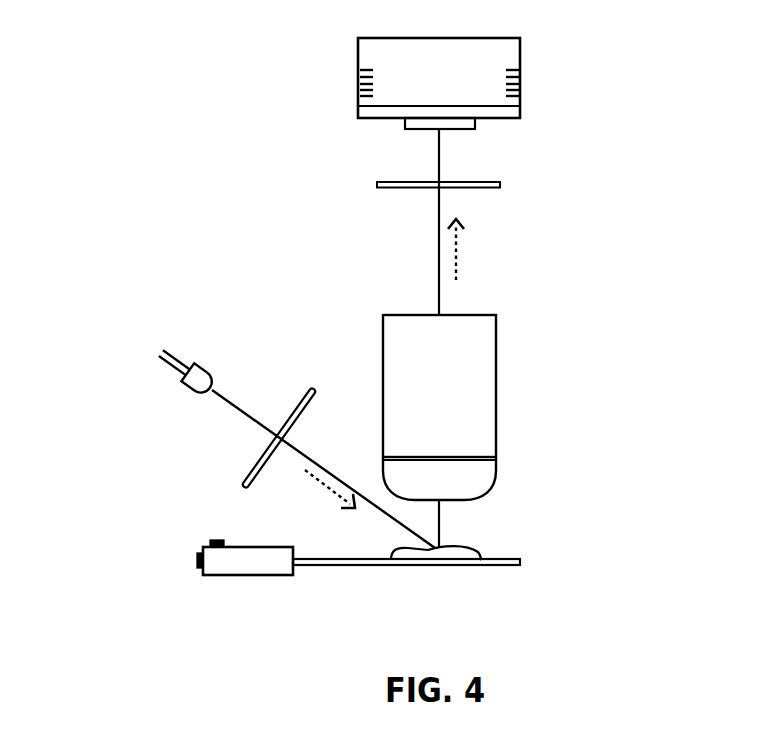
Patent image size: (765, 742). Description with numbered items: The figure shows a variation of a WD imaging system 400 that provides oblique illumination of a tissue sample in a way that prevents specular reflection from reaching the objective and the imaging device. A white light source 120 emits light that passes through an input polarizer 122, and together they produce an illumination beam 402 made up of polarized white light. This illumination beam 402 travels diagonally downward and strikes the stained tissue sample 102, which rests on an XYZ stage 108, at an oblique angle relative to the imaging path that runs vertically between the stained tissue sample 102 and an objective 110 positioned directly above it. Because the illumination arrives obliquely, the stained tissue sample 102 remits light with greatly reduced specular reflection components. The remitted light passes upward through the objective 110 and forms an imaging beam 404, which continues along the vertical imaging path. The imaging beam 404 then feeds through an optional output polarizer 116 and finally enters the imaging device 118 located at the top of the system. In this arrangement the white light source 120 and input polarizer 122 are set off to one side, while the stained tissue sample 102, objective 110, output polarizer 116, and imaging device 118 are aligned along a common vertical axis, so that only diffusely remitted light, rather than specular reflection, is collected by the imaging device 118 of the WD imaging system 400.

The WD imaging system 400 is at (199, 251).
The imaging device 118 is at (439, 176).
The output polarizer 116 is at (499, 182).
The imaging beam 404 is at (477, 249).
The objective 110 is at (499, 431).
The white light source 120 is at (239, 429).
The input polarizer 122 is at (295, 408).
The illumination beam 402 is at (324, 492).
The stained tissue sample 102 is at (466, 546).
The XYZ stage 108 is at (358, 589).